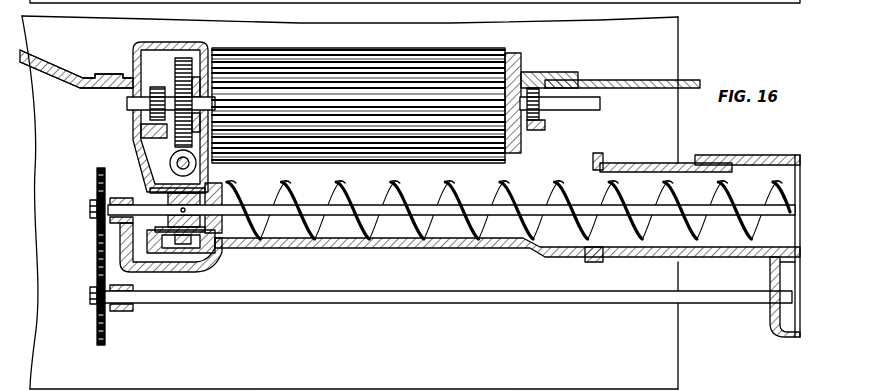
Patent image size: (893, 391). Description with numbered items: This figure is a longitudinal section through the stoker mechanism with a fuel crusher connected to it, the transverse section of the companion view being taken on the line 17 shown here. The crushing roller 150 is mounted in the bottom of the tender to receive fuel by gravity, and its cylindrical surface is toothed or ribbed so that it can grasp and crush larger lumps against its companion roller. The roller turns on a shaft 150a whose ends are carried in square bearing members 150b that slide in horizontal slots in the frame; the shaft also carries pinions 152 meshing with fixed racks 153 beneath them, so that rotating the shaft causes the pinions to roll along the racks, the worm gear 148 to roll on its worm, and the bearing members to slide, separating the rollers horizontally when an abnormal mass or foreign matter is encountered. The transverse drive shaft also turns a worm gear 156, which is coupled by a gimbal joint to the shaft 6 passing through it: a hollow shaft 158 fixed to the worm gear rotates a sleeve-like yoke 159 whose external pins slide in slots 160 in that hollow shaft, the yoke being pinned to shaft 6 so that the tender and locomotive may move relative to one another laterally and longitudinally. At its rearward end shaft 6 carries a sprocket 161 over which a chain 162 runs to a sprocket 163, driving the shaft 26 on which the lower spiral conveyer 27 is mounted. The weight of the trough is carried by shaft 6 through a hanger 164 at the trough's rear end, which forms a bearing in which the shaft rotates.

The shaft 6 is at (424, 207).
The section line 17— 17 is at (183, 325).
The shaft 26 is at (362, 298).
The lower spiral conveyer 27 is at (785, 303).
The worm gear 148 is at (192, 57).
The crushing roller 150 is at (408, 52).
The shaft 150a is at (592, 101).
The bearing member 150b is at (523, 74).
The pinion 152 is at (157, 88).
The rack 153 is at (140, 126).
The worm gear 156 is at (178, 176).
The hollow shaft 158 is at (216, 190).
The yoke 159 is at (212, 222).
The slot 160 is at (150, 194).
The sprocket 161 is at (97, 181).
The chain 162 is at (97, 262).
The sprocket 163 is at (96, 324).
The hanger 164 is at (120, 233).